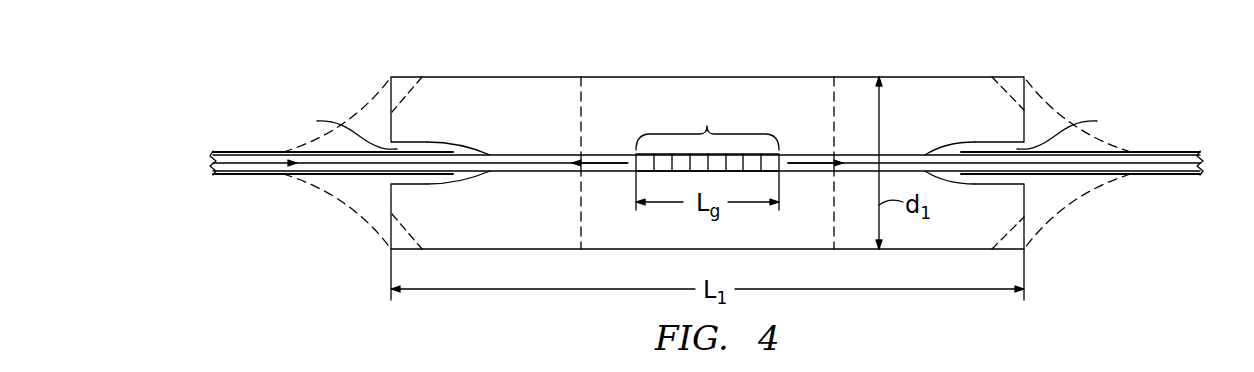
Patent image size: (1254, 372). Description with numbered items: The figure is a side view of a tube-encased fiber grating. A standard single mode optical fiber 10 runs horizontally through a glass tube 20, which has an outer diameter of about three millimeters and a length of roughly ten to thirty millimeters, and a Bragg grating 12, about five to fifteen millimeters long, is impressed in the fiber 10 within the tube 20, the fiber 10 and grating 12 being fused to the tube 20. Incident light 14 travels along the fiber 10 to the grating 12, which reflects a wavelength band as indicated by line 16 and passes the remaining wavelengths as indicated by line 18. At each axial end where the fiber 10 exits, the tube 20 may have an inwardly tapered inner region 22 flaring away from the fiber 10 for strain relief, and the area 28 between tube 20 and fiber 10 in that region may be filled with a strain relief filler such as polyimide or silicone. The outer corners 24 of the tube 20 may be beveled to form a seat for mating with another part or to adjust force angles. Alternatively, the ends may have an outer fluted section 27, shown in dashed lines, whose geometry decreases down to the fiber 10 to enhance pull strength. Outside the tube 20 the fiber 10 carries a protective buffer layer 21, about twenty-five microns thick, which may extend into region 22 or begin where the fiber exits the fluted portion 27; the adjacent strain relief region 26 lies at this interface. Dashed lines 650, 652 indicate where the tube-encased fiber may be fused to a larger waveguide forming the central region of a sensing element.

The optical waveguide 10 is at (538, 153).
The Bragg grating 12 is at (707, 135).
The light 14 is at (240, 174).
The reflected light line 16 is at (608, 172).
The transmitted light line 18 is at (803, 172).
The tube 20 is at (563, 75).
The buffer layer 21 is at (242, 152).
The inner tapered region 22 is at (427, 142).
The beveled outer corners 24 is at (405, 97).
The strain relief region 26 is at (290, 100).
The outer tapered axial section 27 is at (368, 103).
The strain relief filler area 28 is at (709, 128).
The fusion line 650 is at (582, 95).
The fusion line 652 is at (834, 93).